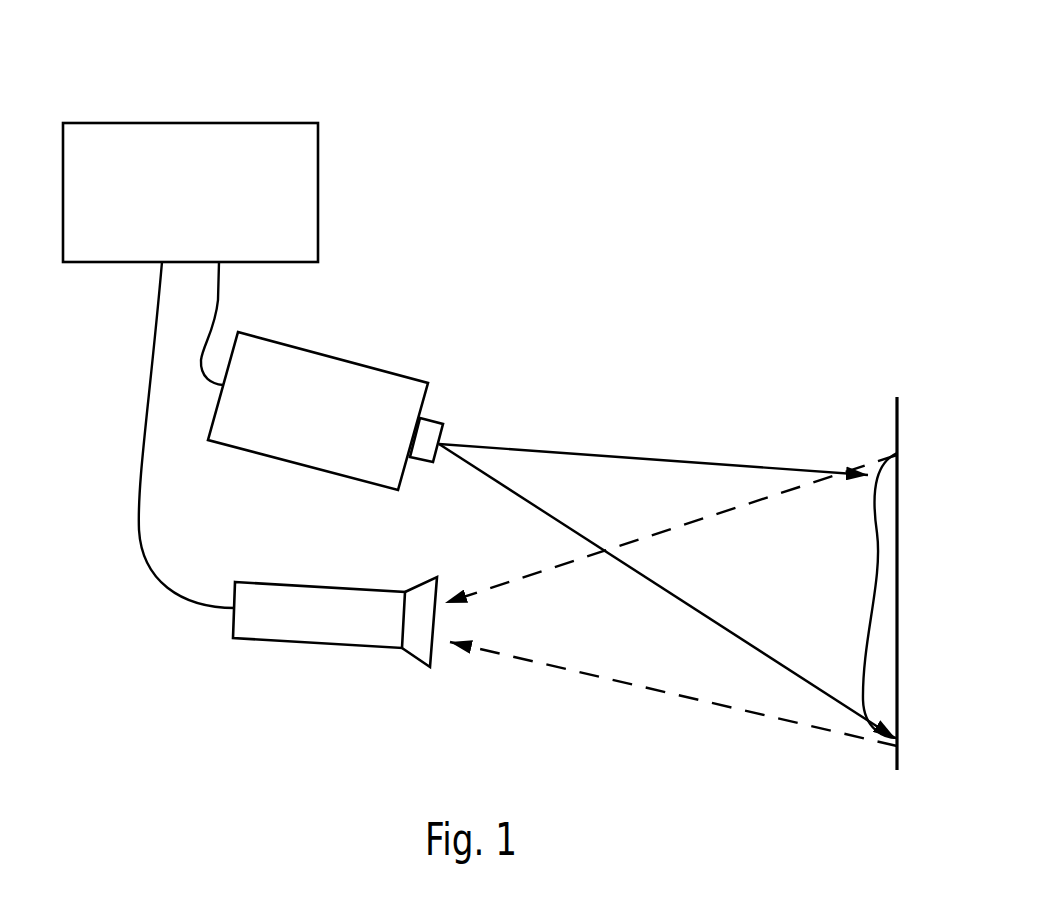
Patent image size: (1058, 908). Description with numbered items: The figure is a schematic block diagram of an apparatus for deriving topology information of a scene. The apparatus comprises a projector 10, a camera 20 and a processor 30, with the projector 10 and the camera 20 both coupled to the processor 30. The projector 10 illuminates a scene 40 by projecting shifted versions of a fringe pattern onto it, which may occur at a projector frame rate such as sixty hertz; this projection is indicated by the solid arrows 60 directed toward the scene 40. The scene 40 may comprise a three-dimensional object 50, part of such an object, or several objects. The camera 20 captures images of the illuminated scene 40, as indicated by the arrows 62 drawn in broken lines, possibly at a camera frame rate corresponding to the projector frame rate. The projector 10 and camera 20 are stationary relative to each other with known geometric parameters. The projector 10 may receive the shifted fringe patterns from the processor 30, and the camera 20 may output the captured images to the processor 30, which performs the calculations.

The projector 10 is at (335, 357).
The camera 20 is at (320, 643).
The processor 30 is at (188, 122).
The scene 40 is at (851, 444).
The three-dimensional object 50 is at (882, 583).
The arrows 60 is at (548, 453).
The arrows in broken lines 62 is at (563, 567).